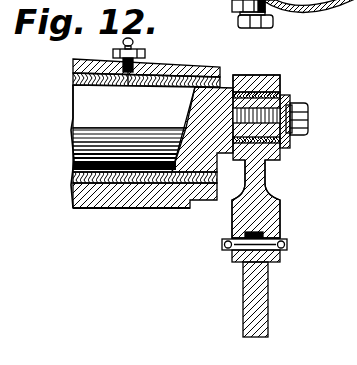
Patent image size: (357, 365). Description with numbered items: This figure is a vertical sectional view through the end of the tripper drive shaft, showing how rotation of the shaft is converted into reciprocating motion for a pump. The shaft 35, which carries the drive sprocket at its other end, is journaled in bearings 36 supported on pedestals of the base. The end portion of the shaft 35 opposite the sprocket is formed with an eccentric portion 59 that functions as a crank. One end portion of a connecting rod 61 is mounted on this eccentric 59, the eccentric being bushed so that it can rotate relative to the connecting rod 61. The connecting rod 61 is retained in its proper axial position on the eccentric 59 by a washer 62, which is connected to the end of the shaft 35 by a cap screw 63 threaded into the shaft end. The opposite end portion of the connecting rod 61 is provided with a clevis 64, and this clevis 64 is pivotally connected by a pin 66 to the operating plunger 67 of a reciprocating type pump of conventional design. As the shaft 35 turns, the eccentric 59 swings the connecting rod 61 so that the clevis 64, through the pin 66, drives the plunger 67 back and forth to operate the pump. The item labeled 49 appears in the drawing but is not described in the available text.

The shaft 35 is at (90, 118).
The bearings 36 is at (165, 63).
The hub 49 is at (284, 15).
The eccentric portion 59 is at (283, 88).
The connecting rod 61 is at (265, 172).
The washer 62 is at (295, 148).
The cap screw 63 is at (305, 118).
The clevis 64 is at (283, 210).
The pin 66 is at (288, 245).
The operating plunger 67 is at (258, 296).